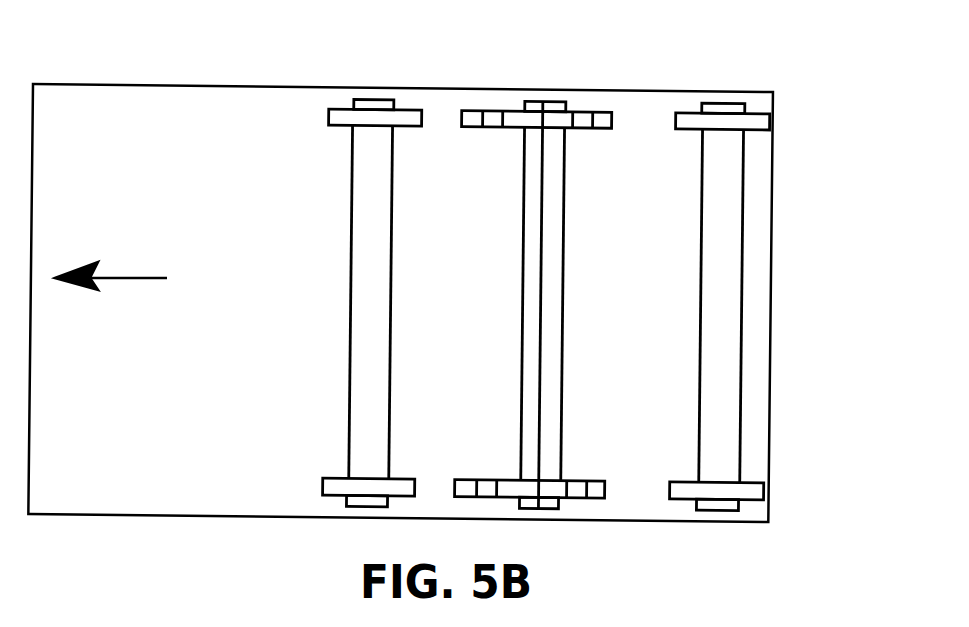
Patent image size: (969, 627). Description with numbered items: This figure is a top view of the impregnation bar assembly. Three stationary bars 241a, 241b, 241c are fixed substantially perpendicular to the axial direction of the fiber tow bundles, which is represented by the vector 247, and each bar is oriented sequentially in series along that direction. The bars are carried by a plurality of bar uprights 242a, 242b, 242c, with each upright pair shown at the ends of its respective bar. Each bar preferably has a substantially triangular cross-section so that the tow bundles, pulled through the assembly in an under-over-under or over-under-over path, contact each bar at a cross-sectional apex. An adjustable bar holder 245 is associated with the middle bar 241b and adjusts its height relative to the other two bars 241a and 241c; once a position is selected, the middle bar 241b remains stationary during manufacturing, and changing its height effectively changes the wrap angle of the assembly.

The bar 241a is at (352, 298).
The middle bar 241b is at (523, 303).
The bar 241c is at (702, 303).
The bar upright 242a is at (338, 107).
The bar upright 242b is at (477, 112).
The bar upright 242c is at (755, 111).
The adjustable bar holder 245 is at (508, 112).
The vector 247 is at (127, 278).